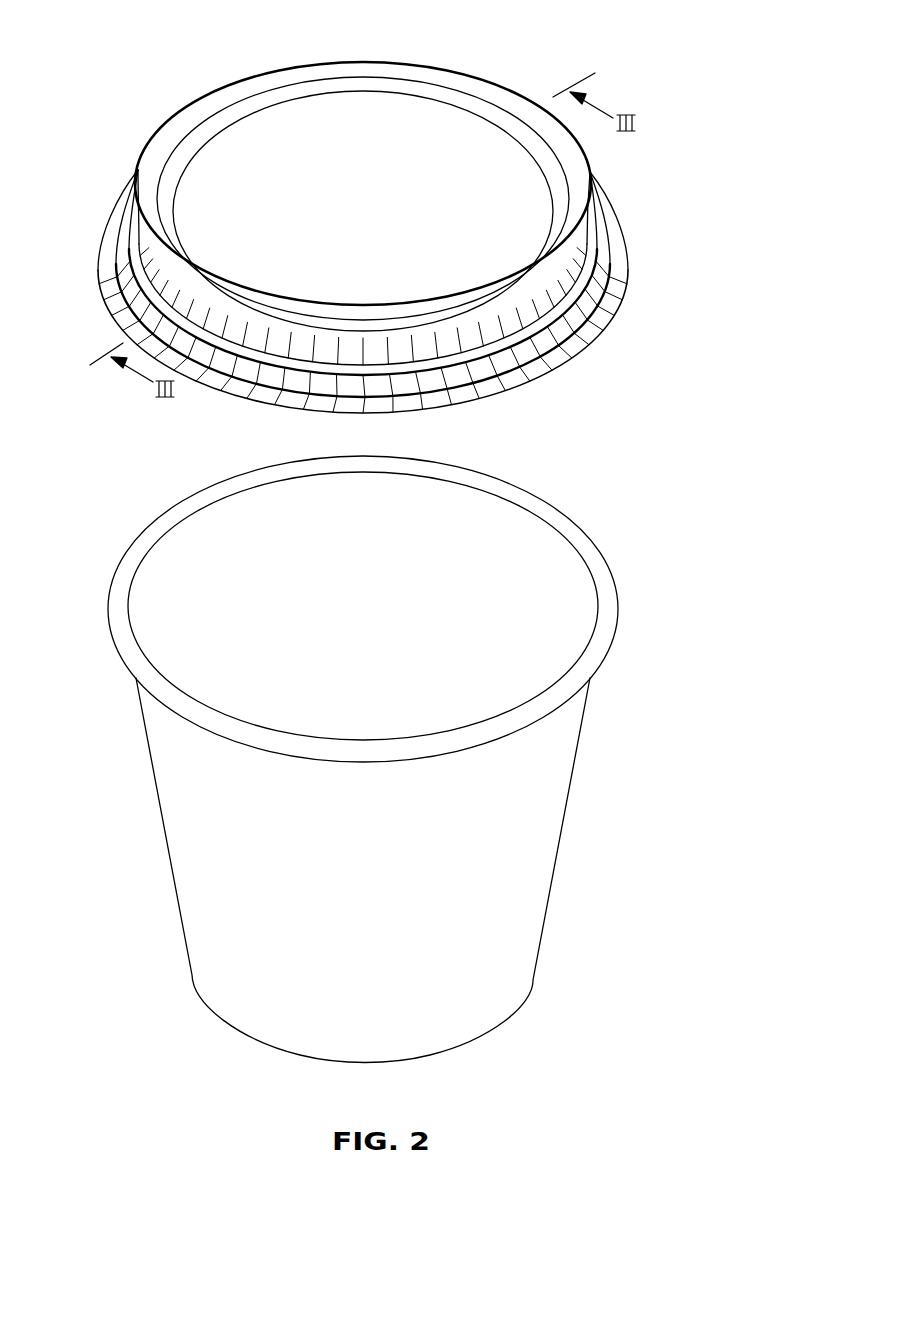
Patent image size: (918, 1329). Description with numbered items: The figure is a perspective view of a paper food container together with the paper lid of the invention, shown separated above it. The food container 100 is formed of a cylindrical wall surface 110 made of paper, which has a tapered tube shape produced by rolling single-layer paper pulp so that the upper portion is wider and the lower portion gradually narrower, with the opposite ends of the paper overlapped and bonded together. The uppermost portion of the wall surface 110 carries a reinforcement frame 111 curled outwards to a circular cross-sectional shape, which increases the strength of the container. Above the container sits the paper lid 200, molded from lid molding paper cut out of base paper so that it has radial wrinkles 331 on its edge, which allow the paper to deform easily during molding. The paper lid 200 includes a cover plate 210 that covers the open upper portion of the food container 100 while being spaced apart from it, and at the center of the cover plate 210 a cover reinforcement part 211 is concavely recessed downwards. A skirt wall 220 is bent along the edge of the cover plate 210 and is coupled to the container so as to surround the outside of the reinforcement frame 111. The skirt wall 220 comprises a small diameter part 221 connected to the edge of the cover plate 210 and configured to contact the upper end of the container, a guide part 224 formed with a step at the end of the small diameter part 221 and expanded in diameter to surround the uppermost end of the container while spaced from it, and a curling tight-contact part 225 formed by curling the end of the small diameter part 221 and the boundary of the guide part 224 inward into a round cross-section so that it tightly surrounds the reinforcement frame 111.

The food container 100 is at (409, 759).
The wall surface 110 is at (543, 809).
The reinforcement frame 111 is at (603, 582).
The paper lid 200 is at (410, 207).
The cover plate 210 is at (392, 70).
The cover reinforcement part 211 is at (302, 110).
The skirt wall 220 is at (438, 326).
The small diameter part 221 is at (590, 243).
The curling tight-contact part 225 is at (605, 278).
The guide part 224 is at (607, 307).
The wrinkles 331 is at (110, 316).